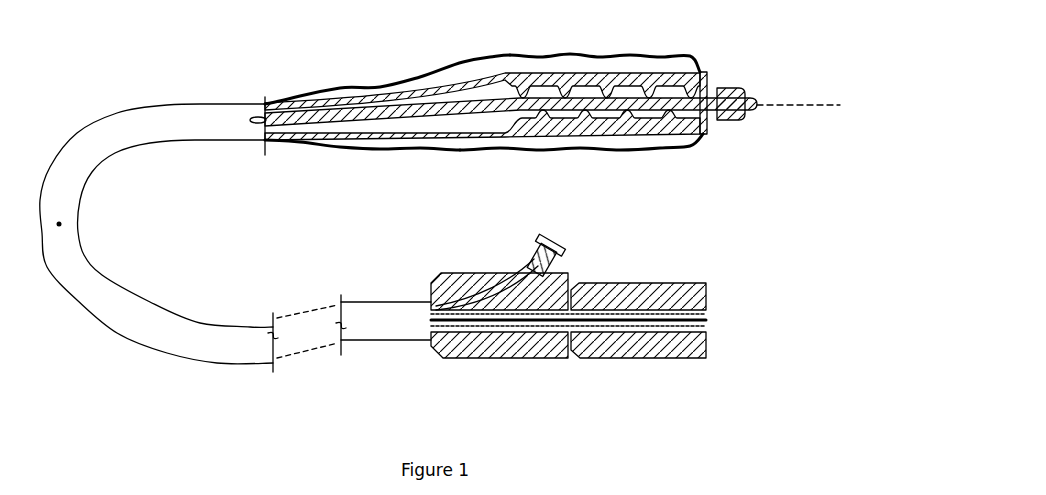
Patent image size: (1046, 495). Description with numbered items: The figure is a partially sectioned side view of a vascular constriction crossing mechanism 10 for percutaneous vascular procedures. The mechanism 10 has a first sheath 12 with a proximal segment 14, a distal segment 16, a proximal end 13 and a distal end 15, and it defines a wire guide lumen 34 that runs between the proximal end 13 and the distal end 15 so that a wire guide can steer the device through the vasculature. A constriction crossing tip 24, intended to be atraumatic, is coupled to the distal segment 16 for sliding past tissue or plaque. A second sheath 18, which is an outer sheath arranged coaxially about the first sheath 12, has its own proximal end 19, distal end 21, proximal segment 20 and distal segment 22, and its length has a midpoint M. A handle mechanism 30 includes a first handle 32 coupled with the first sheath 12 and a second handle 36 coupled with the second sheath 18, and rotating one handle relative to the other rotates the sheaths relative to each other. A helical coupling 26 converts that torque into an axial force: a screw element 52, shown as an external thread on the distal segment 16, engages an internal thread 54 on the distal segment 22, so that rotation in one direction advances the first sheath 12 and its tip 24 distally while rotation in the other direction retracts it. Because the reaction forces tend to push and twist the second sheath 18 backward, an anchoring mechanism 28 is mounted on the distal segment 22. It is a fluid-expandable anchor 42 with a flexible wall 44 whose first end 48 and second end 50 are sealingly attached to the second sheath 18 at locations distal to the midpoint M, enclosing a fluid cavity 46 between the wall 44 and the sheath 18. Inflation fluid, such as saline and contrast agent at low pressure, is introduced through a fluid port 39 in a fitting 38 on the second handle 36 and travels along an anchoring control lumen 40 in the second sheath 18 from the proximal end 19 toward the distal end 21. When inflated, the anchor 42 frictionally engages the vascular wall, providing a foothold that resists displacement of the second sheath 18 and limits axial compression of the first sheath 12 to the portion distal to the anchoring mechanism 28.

The vascular constriction crossing mechanism 10 is at (70, 92).
The midpoint M is at (61, 224).
The first sheath 12 is at (366, 104).
The proximal end 13 is at (705, 326).
The proximal segment 14 is at (514, 330).
The distal end 15 is at (754, 104).
The distal segment 16 is at (428, 110).
The second sheath 18 is at (518, 128).
The proximal end 19 is at (426, 349).
The proximal segment 20 is at (360, 330).
The distal end 21 is at (707, 135).
The distal segment 22 is at (468, 116).
The constriction crossing tip 24 is at (727, 87).
The helical coupling 26 is at (508, 86).
The anchoring mechanism 28 is at (612, 50).
The handle mechanism 30 is at (547, 326).
The first handle 32 is at (638, 291).
The wire guide lumen 34 is at (690, 320).
The second handle 36 is at (471, 350).
The fitting 38 is at (528, 240).
The fluid port 39 is at (555, 250).
The anchoring control lumen 40 is at (328, 97).
The expandable anchor 42 is at (394, 151).
The flexible wall 44 is at (437, 150).
The fluid cavity 46 is at (464, 78).
The first end 48 is at (352, 152).
The second end 50 is at (700, 66).
The screw element 52 is at (586, 113).
The internal thread 54 is at (545, 88).